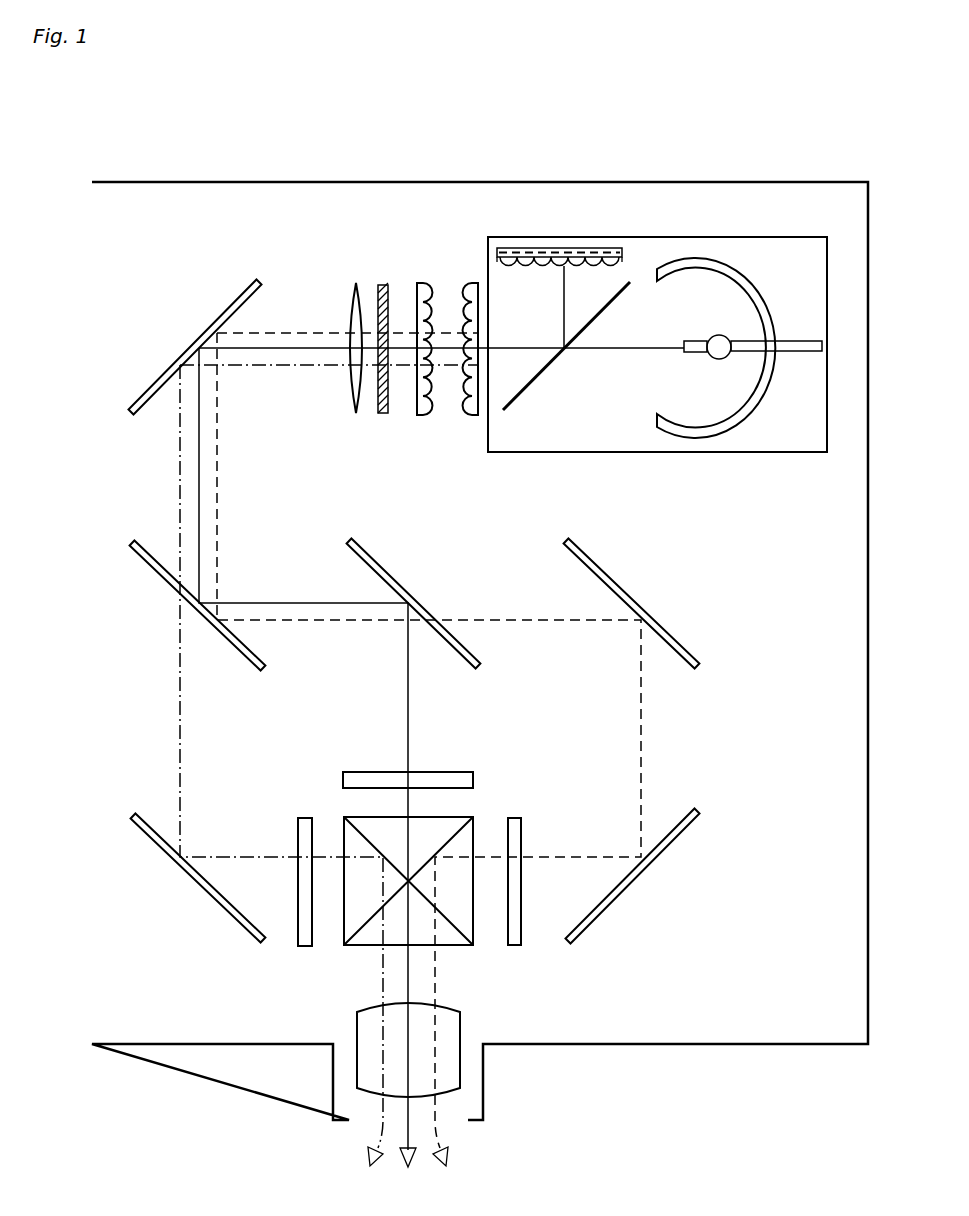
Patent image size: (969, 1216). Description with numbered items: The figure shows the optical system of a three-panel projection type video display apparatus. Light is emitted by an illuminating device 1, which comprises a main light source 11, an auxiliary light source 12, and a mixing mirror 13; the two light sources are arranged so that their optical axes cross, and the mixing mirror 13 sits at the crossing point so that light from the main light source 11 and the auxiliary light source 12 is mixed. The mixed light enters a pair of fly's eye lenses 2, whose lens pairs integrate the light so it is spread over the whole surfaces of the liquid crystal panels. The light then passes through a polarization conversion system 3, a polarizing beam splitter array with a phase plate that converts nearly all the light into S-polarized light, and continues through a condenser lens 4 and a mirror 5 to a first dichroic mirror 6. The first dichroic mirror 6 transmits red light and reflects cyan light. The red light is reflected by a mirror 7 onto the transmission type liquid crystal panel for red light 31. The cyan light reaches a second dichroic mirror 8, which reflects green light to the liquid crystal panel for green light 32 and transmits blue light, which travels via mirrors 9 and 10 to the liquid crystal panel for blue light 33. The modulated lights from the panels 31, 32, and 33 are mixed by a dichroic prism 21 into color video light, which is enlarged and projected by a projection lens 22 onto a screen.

The illuminating device 1 is at (711, 473).
The pair of fly's eye lenses 2 is at (477, 281).
The polarization conversion system 3 is at (382, 284).
The condenser lens 4 is at (355, 284).
The mirror 5 is at (222, 312).
The first dichroic mirror 6 is at (252, 670).
The mirror 7 is at (208, 897).
The second dichroic mirror 8 is at (390, 572).
The mirror 9 is at (598, 570).
The mirror 10 is at (682, 827).
The main light source 11 is at (744, 295).
The auxiliary light source 12 is at (519, 268).
The mixing mirror 13 is at (533, 390).
The dichroic prism 21 is at (455, 945).
The projection lens 22 is at (455, 1020).
The transmission type liquid crystal panel for red light 31 is at (301, 817).
The transmission type liquid crystal panel for green light 32 is at (470, 780).
The transmission type liquid crystal panel for blue light 33 is at (516, 816).